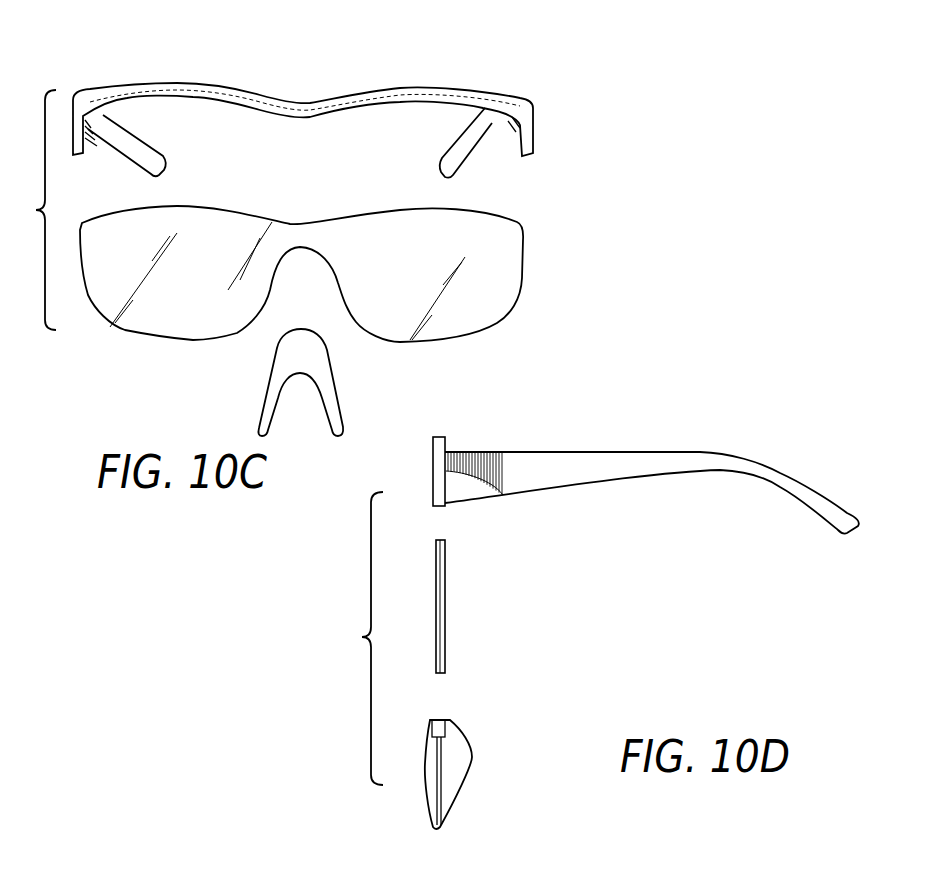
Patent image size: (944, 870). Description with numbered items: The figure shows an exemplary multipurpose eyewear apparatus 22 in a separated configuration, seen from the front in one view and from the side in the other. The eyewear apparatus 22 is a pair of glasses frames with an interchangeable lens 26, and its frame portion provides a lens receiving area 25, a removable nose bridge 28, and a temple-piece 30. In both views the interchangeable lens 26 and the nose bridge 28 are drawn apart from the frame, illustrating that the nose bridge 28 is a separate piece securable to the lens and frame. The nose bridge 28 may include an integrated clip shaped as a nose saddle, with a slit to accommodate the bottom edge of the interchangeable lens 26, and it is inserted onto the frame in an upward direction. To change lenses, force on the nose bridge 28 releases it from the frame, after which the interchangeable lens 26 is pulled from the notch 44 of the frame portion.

In FIG. 10C, the eyewear apparatus 22 is at (146, 61).
In FIG. 10D, the eyewear apparatus 22 is at (743, 412).
In FIG. 10C, the lens receiving area 25 is at (82, 142).
In FIG. 10C, the interchangeable lens 26 is at (497, 290).
In FIG. 10D, the interchangeable lens 26 is at (443, 585).
In FIG. 10C, the nose bridge 28 is at (265, 393).
In FIG. 10D, the nose bridge 28 is at (460, 793).
In FIG. 10D, the temple-piece 30 is at (647, 450).
In FIG. 10C, the notch 44 is at (517, 113).